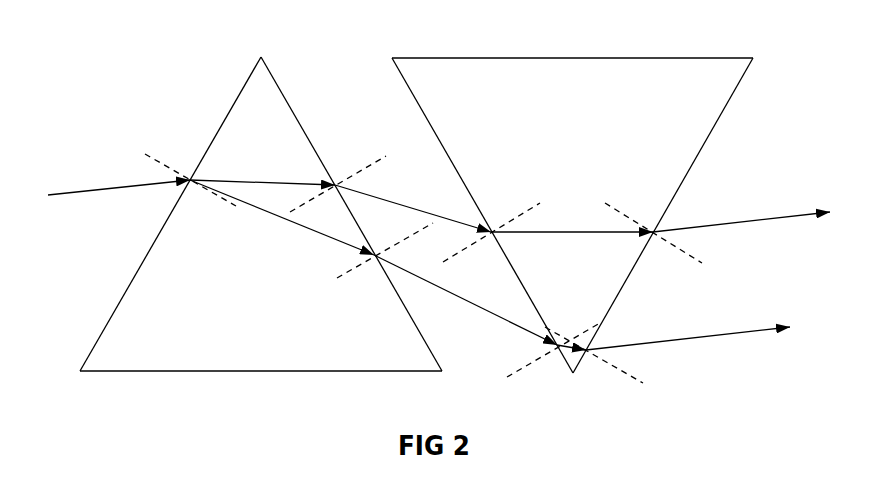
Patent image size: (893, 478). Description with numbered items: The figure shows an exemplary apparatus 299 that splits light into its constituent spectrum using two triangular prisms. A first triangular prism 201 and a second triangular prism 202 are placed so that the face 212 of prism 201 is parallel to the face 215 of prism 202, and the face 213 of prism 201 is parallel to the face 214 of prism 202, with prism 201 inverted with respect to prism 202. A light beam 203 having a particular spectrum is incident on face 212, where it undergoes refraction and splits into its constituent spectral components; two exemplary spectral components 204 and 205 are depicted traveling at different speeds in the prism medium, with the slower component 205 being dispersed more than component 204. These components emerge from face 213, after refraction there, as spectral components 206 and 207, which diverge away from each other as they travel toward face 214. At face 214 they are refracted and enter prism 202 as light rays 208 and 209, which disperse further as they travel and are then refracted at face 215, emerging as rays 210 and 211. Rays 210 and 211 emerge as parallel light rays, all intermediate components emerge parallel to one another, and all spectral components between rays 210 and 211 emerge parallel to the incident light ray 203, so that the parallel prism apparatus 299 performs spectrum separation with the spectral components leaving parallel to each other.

The apparatus 299 is at (149, 74).
The triangular prism 201 is at (264, 211).
The triangular prism 202 is at (576, 197).
The light beam 203 is at (117, 181).
The spectral component 204 is at (262, 170).
The spectral component 205 is at (282, 217).
The spectral component 206 is at (413, 206).
The spectral component 207 is at (465, 300).
The light ray 208 is at (572, 218).
The light ray 209 is at (573, 330).
The ray 210 is at (741, 215).
The ray 211 is at (688, 329).
The face 212 is at (88, 348).
The face 213 is at (433, 352).
The face 214 is at (396, 77).
The face 215 is at (748, 73).